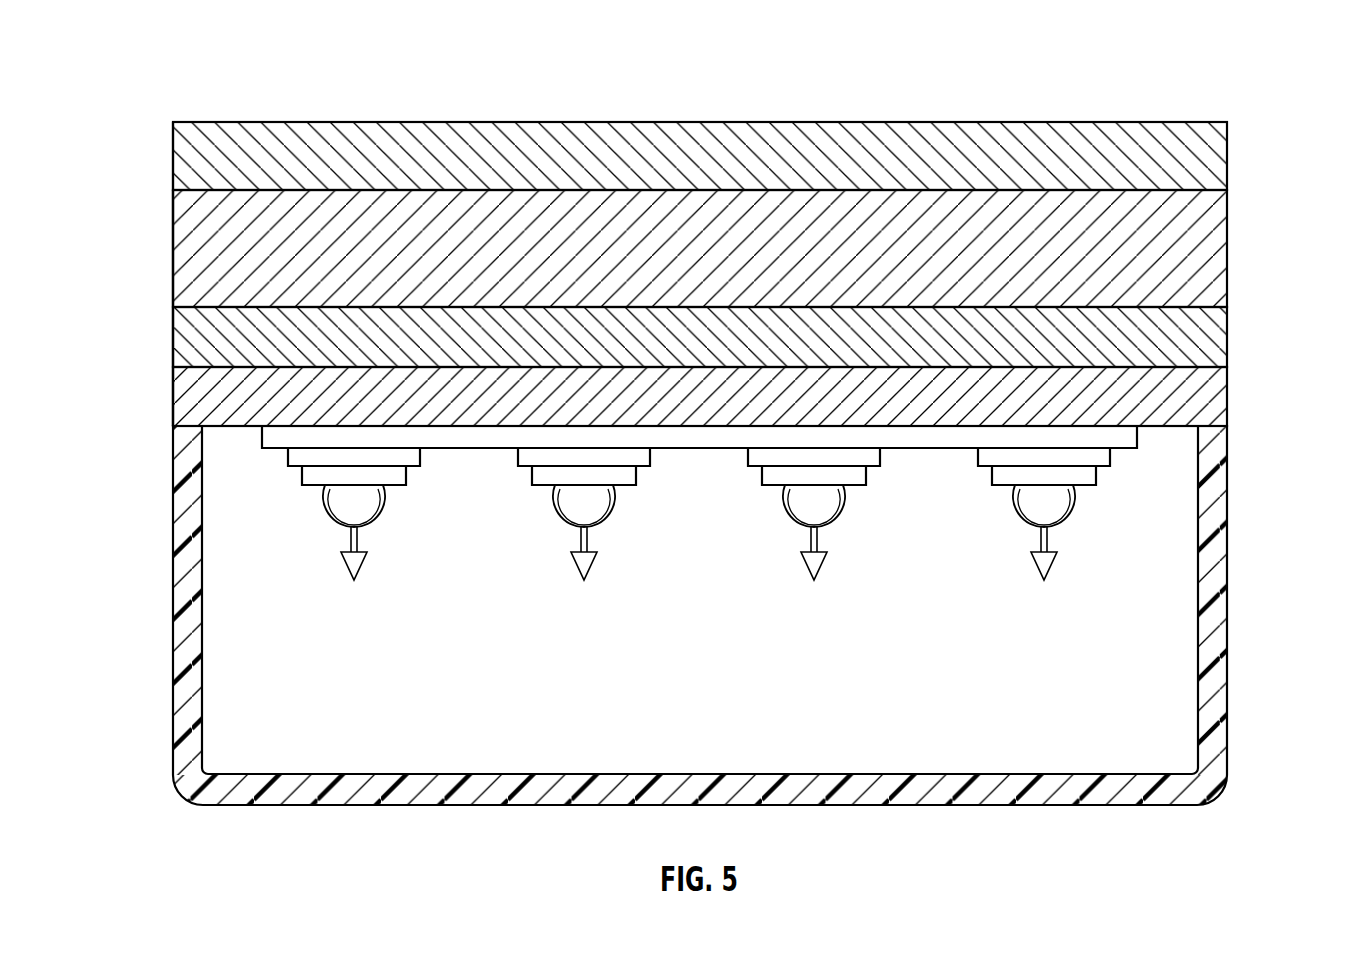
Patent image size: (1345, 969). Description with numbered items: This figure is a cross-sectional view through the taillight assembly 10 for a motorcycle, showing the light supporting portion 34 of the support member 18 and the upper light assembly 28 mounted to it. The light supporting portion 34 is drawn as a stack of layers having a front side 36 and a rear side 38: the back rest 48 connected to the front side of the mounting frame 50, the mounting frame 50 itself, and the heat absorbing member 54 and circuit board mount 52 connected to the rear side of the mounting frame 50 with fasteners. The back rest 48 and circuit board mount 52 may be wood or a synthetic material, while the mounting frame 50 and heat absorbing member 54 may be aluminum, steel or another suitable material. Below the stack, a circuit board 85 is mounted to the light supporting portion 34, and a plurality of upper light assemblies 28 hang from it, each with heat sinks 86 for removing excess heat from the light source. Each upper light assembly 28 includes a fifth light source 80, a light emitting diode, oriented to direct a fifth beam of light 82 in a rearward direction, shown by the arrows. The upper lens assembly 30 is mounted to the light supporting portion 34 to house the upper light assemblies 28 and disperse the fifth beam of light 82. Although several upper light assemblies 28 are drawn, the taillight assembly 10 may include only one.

The taillight assembly 10 is at (110, 84).
The support member 18 is at (173, 233).
The upper light assembly 28 is at (839, 524).
The upper lens assembly 30 is at (1227, 609).
The light supporting portion 34 is at (173, 282).
The front side 36 is at (703, 122).
The rear side 38 is at (1175, 428).
The back rest 48 is at (1227, 165).
The mounting frame 50 is at (1227, 247).
The circuit board mount 52 is at (1227, 400).
The heat absorbing member 54 is at (1227, 339).
The fifth light source 80 is at (837, 516).
The fifth beam of light 82 is at (822, 573).
The circuit board 85 is at (270, 450).
The heat sinks 86 is at (867, 476).